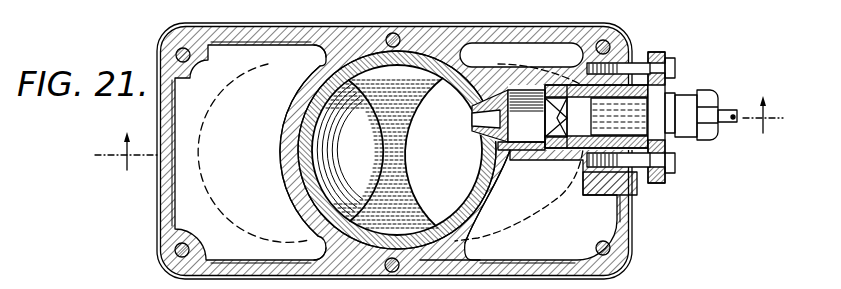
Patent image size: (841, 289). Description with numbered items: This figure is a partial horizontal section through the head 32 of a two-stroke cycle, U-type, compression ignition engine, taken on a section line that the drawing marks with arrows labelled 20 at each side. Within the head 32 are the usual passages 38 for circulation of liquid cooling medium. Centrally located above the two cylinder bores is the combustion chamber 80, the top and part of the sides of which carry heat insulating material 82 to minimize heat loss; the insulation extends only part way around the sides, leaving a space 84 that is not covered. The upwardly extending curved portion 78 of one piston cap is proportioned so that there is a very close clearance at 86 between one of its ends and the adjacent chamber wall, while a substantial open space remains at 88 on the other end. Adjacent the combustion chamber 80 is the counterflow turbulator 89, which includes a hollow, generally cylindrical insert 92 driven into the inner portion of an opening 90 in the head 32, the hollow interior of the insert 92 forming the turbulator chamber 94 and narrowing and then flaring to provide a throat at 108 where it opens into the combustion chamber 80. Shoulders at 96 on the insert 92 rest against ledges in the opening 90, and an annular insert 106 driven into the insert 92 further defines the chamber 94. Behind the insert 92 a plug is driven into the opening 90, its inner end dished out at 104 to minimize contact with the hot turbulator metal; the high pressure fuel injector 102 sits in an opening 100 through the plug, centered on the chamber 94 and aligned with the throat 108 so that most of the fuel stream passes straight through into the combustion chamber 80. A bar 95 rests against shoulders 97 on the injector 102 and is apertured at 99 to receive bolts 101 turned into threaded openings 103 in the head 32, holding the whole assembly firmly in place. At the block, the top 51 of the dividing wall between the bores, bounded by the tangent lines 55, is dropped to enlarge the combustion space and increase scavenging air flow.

The passage 38 is at (185, 108).
The head 32 is at (608, 37).
The lines 55 is at (326, 59).
The heat insulating material 82 is at (460, 64).
The combustion chamber 80 is at (350, 112).
The space 84 is at (268, 171).
The curved portion 78 is at (298, 136).
The open space 88 is at (335, 220).
The close clearance 86 is at (373, 107).
The annular insert 106 is at (600, 212).
The opening 90 is at (508, 120).
The insert 92 is at (485, 143).
The turbulator chamber 94 is at (537, 116).
The throat 108 is at (521, 108).
The shoulders 96 is at (556, 140).
The dished out portion 104 is at (619, 116).
The counterflow turbulator 89 is at (520, 160).
The bar 95 is at (668, 138).
The apertures 99 is at (670, 62).
The bolts 101 is at (668, 53).
The opening 100 is at (673, 70).
The shoulders 97 is at (652, 97).
The fuel injector 102 is at (712, 92).
The threaded openings 103 is at (634, 194).
The section line 20 is at (439, 144).
The top 51 is at (433, 228).